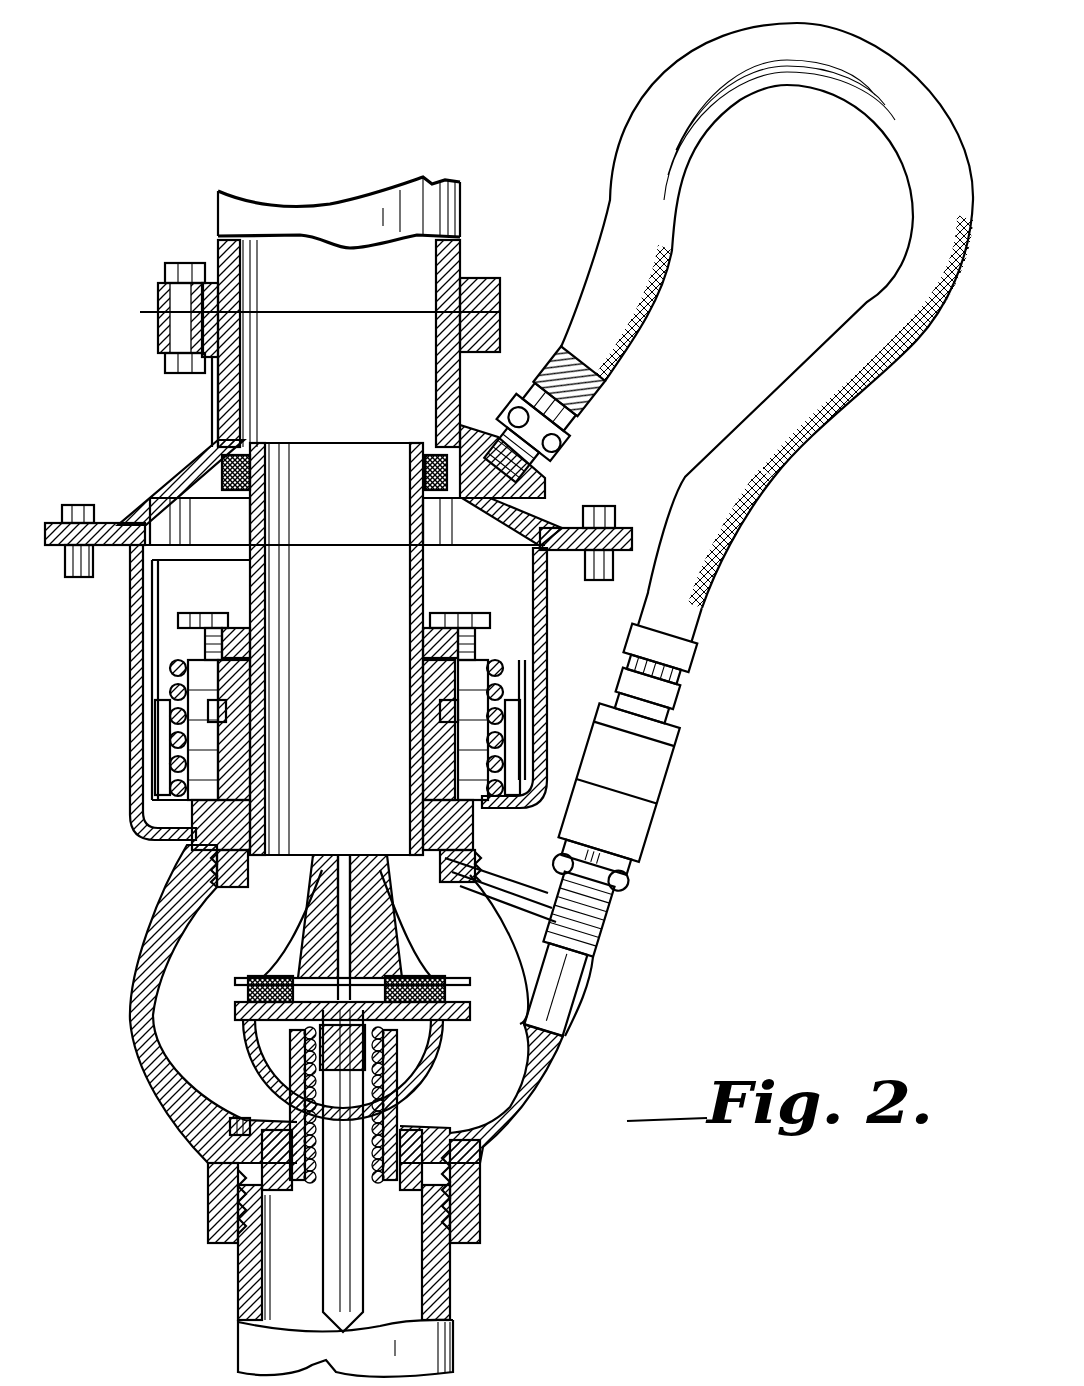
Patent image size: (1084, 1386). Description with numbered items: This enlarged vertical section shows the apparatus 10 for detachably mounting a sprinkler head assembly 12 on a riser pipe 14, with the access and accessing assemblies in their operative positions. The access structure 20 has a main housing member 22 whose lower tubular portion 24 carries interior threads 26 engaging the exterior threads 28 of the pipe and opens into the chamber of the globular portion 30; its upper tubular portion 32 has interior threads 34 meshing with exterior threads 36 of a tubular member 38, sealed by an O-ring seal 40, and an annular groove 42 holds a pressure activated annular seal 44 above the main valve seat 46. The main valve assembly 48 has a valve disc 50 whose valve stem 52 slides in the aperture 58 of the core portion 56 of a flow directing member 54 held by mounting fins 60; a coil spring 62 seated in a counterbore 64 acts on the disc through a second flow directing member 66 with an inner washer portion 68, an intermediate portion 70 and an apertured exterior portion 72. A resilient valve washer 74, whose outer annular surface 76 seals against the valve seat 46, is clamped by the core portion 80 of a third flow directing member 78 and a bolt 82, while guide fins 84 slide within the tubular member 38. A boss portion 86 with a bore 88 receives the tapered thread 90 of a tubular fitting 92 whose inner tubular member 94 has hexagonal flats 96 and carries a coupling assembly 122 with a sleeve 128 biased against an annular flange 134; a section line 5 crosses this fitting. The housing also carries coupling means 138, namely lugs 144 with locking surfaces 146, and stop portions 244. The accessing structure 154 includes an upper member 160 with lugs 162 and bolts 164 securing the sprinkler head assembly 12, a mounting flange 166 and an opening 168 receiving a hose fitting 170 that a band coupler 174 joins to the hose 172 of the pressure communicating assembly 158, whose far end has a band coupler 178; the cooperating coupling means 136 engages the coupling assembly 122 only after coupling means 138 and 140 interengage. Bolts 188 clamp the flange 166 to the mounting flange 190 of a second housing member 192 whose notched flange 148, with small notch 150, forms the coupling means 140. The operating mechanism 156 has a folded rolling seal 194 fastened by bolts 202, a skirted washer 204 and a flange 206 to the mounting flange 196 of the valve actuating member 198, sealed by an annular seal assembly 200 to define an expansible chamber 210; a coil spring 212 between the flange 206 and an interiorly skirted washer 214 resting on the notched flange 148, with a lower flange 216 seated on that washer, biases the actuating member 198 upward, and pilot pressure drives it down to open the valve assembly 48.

The apparatus 10 is at (132, 466).
The sprinkler head assembly 12 is at (466, 191).
The riser pipe 14 is at (458, 1311).
The access structure 20 is at (128, 1032).
The main housing member 22 is at (141, 1086).
The lower tubular portion 24 is at (208, 1203).
The interior threads 26 is at (236, 1250).
The exterior threads 28 is at (481, 1200).
The central globular portion 30 is at (510, 1086).
The upper tubular portion 32 is at (200, 889).
The interior threads 34 is at (400, 936).
The exterior threads 36 is at (225, 891).
The tubular member 38 is at (252, 783).
The O-ring seal 40 is at (240, 813).
The annular groove 42 is at (425, 722).
The pressure activated annular seal 44 is at (228, 711).
The annular main valve seat 46 is at (256, 856).
The main valve assembly 48 is at (450, 983).
The valve disc 50 is at (456, 1015).
The valve stem 52 is at (356, 1279).
The flow directing member 54 is at (410, 1116).
The core portion 56 is at (372, 1196).
The central aperture 58 is at (338, 1196).
The mounting fins 60 is at (268, 1124).
The coil spring 62 is at (270, 1056).
The counterbore 64 is at (305, 1182).
The second flow directing member 66 is at (256, 1038).
The inner washer portion 68 is at (240, 1010).
The cylindrical intermediate portion 70 is at (384, 1040).
The apertured exterior portion 72 is at (446, 1055).
The resilient valve washer 74 is at (270, 978).
The outer annular surface 76 is at (248, 990).
The third flow directing member 78 is at (390, 851).
The core portion 80 is at (395, 969).
The bolt 82 is at (318, 870).
The guide fins 84 is at (272, 922).
The enlarged boss portion 86 is at (616, 951).
The bore 88 is at (560, 1016).
The exterior tapered thread 90 is at (622, 926).
The tubular fitting 92 is at (632, 856).
The inner tubular member 94 is at (586, 864).
The hexagonal flats 96 is at (632, 886).
The detachable interengaging coupling assembly 122 is at (674, 774).
The sleeve 128 is at (662, 806).
The annular flange 134 is at (682, 746).
The cooperating coupling means 136 is at (690, 717).
The main detachable coupling means 138 is at (162, 806).
The main detachable coupling means 140 is at (527, 816).
The larger lugs 144 is at (152, 836).
The downwardly facing locking surfaces 146 is at (148, 870).
The notched flange 148 is at (178, 868).
The small notch 150 is at (546, 846).
The accessing structure 154 is at (120, 724).
The pressure actuated operating mechanism 156 is at (634, 634).
The pressure communicating assembly 158 is at (768, 491).
The upper member 160 is at (213, 440).
The lugs 162 is at (162, 340).
The bolts 164 is at (165, 310).
The annular mounting flange 166 is at (66, 518).
The opening 168 is at (578, 444).
The hose fitting 170 is at (513, 426).
The hose 172 is at (616, 366).
The band coupler 174 is at (542, 354).
The band coupler 178 is at (686, 672).
The bolts 188 is at (120, 521).
The mounting flange 190 is at (92, 582).
The second housing member 192 is at (148, 690).
The folded rolling seal 194 is at (129, 656).
The mounting flange 196 is at (442, 672).
The valve actuating member 198 is at (360, 447).
The annular seal assembly 200 is at (423, 473).
The bolts 202 is at (234, 642).
The exteriorly skirted washer 204 is at (252, 630).
The upper inwardly extending flange 206 is at (232, 622).
The expansible and contractible chamber 210 is at (182, 472).
The coil spring 212 is at (170, 738).
The interiorly skirted washer 214 is at (548, 812).
The lower outwardly extending flange 216 is at (538, 762).
The integral stop portions 244 is at (415, 898).
The section line 5 is at (674, 816).